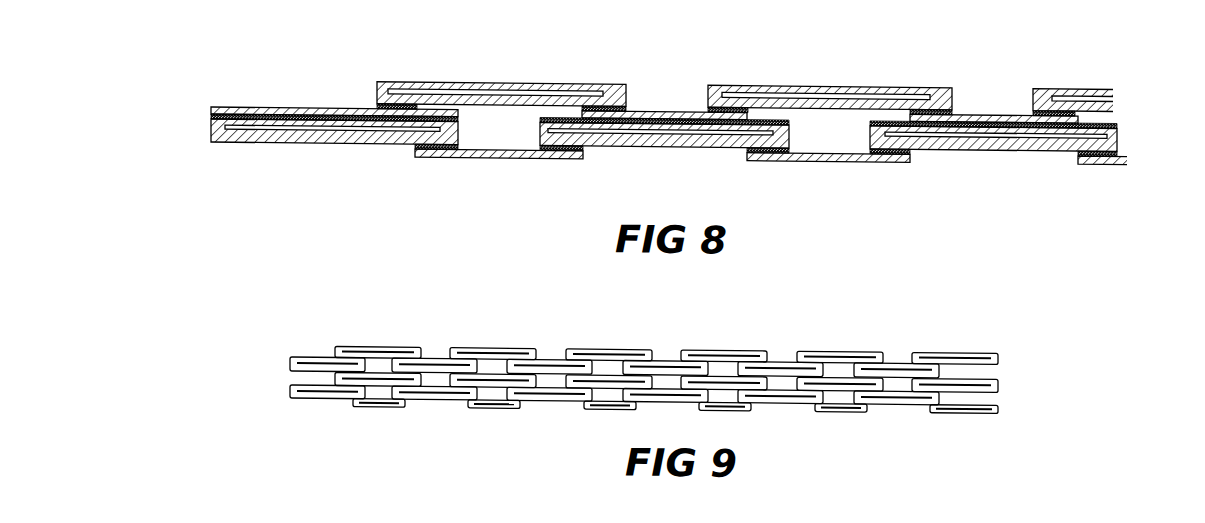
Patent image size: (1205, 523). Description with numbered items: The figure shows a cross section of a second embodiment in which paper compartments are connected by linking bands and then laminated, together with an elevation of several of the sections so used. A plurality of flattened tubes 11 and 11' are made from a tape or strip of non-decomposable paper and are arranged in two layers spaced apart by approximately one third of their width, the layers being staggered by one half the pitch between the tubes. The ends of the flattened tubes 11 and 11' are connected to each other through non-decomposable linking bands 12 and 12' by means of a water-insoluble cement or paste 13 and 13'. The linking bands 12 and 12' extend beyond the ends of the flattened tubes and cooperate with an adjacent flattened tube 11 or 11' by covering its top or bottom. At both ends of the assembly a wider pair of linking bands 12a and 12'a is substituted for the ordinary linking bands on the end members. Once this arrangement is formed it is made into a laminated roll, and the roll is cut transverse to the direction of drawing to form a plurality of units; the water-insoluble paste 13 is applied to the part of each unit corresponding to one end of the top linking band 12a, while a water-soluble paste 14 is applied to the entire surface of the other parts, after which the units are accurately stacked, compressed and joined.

In FIG. 8, the flattened tube 11 is at (745, 81).
In FIG. 9, the flattened tube 11 is at (620, 362).
In FIG. 8, the flattened tube 11' is at (664, 157).
In FIG. 9, the flattened tube 11' is at (896, 349).
In FIG. 8, the linking band 12 is at (830, 96).
In FIG. 9, the linking band 12 is at (560, 347).
In FIG. 8, the linking band 12' is at (771, 174).
In FIG. 9, the linking band 12' is at (609, 354).
In FIG. 8, the linking band 12a is at (273, 107).
In FIG. 9, the linking band 12'a is at (989, 372).
In FIG. 8, the water-insoluble paste 13 is at (702, 92).
In FIG. 8, the water-insoluble paste 13' is at (766, 172).
In FIG. 8, the water-soluble paste 14 is at (211, 117).